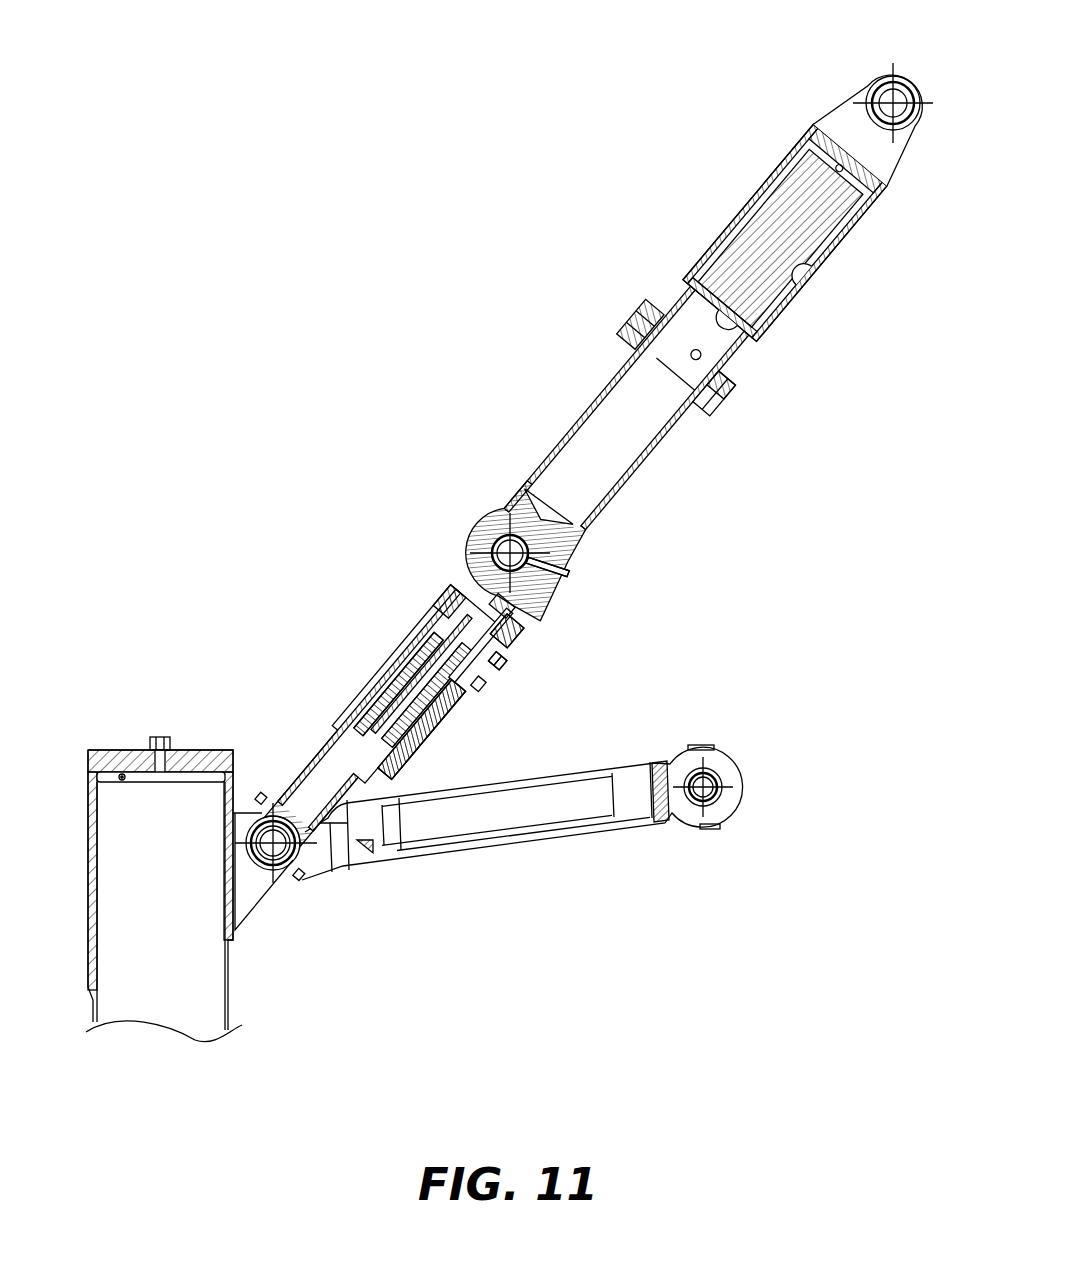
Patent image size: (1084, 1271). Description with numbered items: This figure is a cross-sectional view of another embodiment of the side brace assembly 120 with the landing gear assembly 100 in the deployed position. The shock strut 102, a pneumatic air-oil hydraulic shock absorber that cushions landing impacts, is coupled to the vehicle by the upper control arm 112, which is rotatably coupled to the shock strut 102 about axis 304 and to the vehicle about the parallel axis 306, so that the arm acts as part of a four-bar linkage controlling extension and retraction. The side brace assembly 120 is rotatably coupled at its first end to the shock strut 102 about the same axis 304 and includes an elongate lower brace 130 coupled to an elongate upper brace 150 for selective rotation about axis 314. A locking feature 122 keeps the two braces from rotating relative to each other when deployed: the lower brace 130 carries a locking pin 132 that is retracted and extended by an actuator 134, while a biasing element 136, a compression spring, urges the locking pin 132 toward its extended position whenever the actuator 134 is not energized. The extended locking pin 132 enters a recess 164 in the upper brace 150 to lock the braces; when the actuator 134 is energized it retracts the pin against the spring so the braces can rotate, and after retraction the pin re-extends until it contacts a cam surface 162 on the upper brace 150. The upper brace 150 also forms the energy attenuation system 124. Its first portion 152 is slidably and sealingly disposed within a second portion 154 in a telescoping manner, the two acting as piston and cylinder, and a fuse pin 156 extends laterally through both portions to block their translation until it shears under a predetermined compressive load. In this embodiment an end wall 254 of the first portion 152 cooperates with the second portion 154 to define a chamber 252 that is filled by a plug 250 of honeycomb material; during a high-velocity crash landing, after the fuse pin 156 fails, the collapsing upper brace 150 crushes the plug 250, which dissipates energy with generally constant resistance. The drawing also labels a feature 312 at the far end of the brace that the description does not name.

The landing gear assembly 100 is at (505, 540).
The shock strut 102 is at (88, 870).
The upper control arm 112 is at (553, 817).
The side brace assembly 120 is at (456, 640).
The locking feature 122 is at (508, 655).
The energy attenuation system 124 is at (804, 227).
The lower brace 130 is at (370, 683).
The locking pin 132 is at (505, 632).
The actuator 134 is at (500, 668).
The biasing element 136 is at (413, 752).
The upper brace 150 is at (735, 297).
The first portion 152 is at (590, 413).
The second portion 154 is at (772, 187).
The fuse pin 156 is at (648, 340).
The cam surface 162 is at (515, 531).
The recess 164 is at (540, 595).
The plug 250 is at (740, 247).
The chamber 252 is at (800, 258).
The end wall 254 is at (748, 340).
The axis 304 is at (302, 880).
The axis 306 is at (742, 782).
The upper pivot pin 312 is at (908, 112).
The axis 314 is at (472, 548).